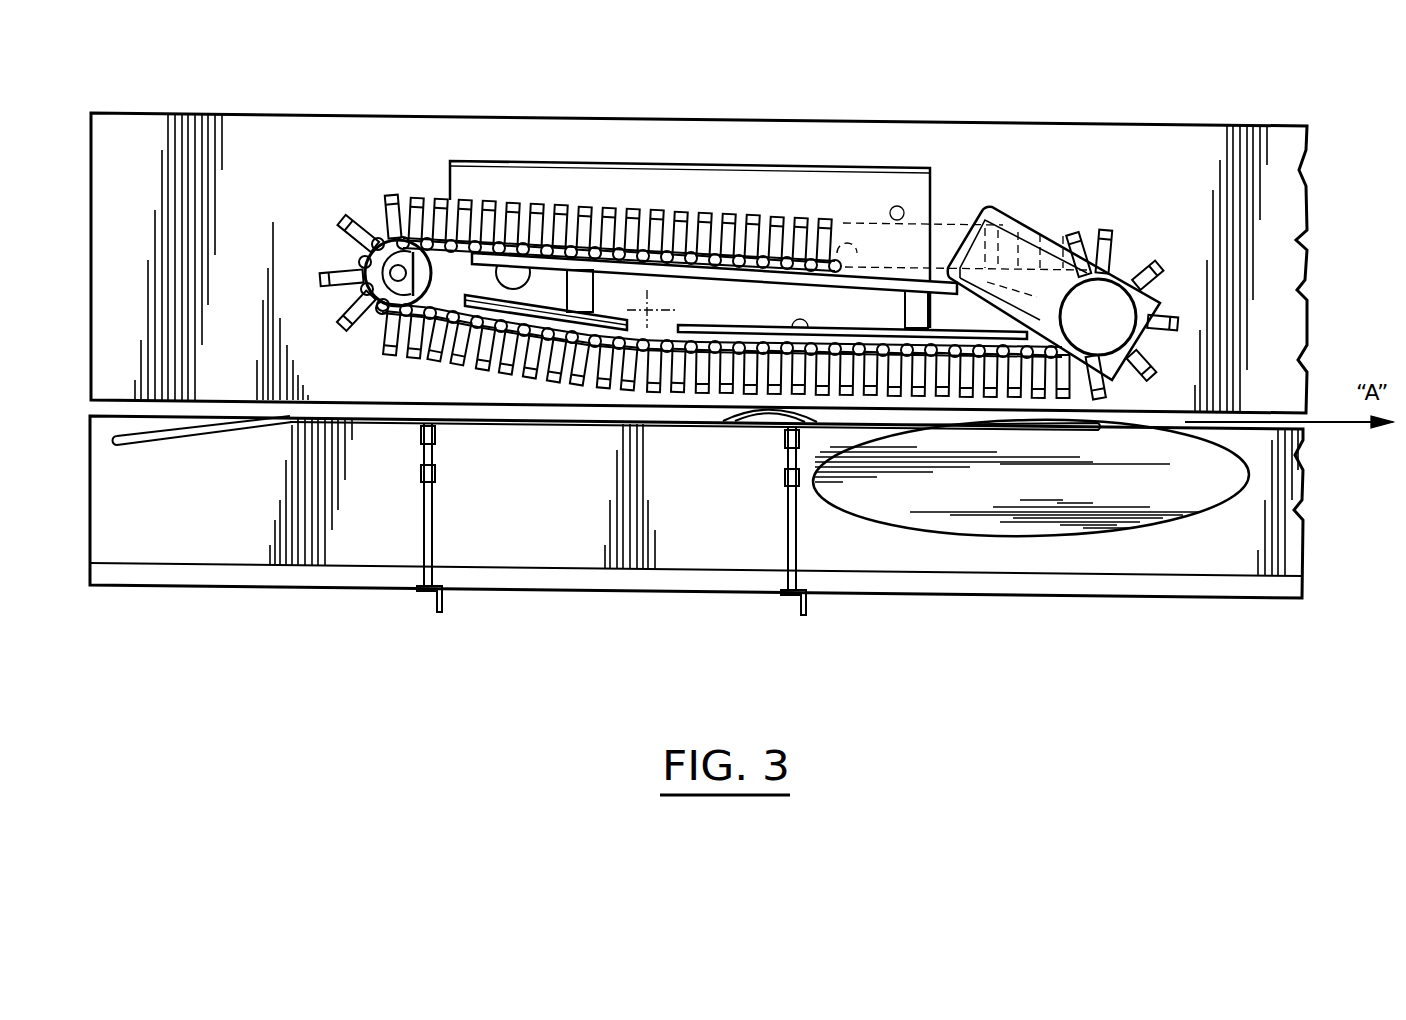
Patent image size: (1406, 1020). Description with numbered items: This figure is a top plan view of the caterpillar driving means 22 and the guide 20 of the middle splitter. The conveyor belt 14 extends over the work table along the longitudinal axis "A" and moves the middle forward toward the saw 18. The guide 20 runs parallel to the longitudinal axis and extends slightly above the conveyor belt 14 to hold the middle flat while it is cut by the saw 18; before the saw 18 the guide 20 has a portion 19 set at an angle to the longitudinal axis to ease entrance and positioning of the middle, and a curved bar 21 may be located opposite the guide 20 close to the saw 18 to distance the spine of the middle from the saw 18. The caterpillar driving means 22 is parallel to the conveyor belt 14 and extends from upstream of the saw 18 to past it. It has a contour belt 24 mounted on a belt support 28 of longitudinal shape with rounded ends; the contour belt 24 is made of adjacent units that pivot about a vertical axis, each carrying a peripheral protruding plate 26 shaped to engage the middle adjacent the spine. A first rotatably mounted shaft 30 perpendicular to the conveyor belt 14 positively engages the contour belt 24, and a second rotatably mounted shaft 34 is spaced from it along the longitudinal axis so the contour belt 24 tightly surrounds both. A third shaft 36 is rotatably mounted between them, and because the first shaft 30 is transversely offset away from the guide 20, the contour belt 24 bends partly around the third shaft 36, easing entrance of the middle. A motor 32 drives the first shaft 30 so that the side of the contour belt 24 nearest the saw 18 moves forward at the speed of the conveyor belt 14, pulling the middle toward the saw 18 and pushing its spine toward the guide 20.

The conveyor belt 14 is at (590, 545).
The saw 18 is at (1094, 520).
The portion 19 is at (220, 440).
The guide 20 is at (517, 425).
The curved bar 21 is at (765, 415).
The caterpillar driving means 22 is at (905, 280).
The contour belt 24 is at (683, 348).
The peripheral protruding plate 26 is at (392, 210).
The belt support 28 is at (880, 273).
The first rotatably mounted shaft 30 is at (1086, 329).
The motor 32 is at (985, 227).
The second rotatably mounted shaft 34 is at (392, 273).
The third shaft 36 is at (650, 306).